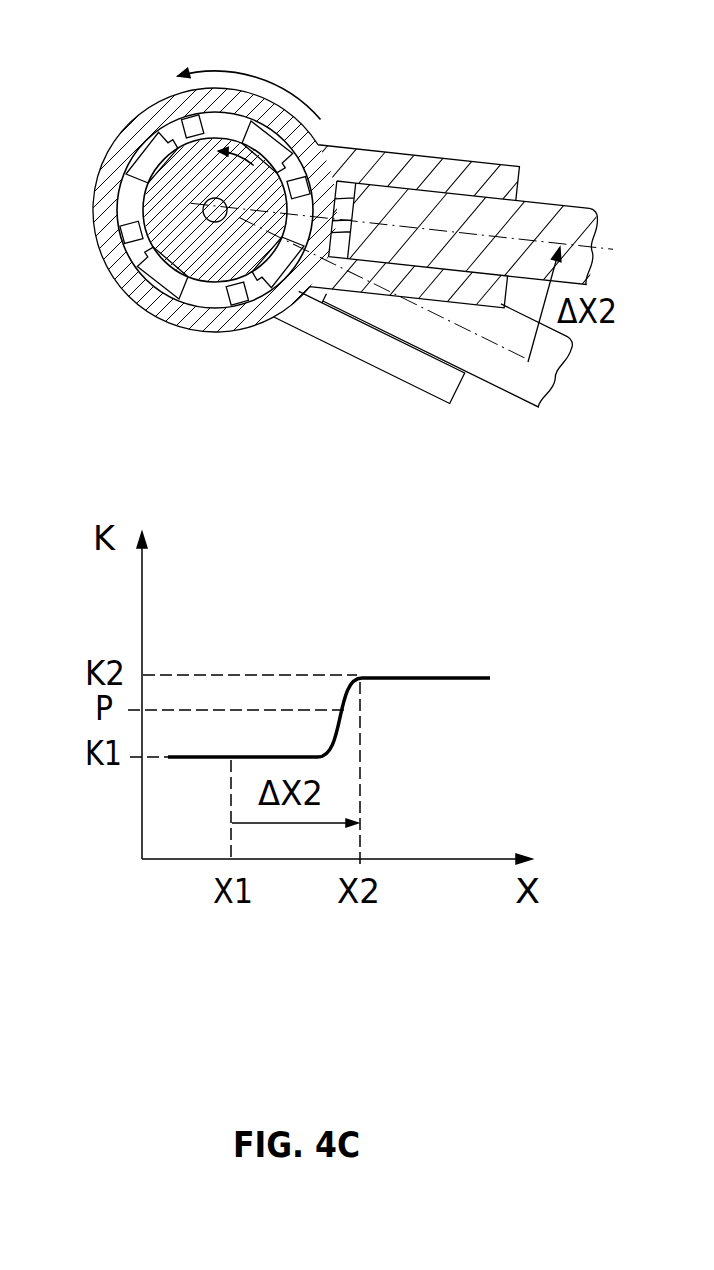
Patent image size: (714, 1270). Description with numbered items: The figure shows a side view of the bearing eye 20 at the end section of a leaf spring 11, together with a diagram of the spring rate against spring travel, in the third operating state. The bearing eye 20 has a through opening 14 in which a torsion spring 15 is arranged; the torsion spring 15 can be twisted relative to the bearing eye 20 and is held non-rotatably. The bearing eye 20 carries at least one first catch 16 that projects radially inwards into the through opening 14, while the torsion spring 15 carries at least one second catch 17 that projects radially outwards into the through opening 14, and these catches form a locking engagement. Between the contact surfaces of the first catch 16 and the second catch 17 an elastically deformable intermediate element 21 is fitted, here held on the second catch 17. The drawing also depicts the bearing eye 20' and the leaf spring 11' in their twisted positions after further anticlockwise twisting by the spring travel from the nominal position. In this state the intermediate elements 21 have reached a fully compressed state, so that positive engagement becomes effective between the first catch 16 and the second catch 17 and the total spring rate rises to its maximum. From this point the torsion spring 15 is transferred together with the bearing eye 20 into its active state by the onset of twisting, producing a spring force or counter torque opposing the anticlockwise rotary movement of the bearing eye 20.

The leaf spring 11 is at (476, 201).
The leaf spring in twisted position 11' is at (449, 360).
The through opening 14 is at (218, 300).
The torsion spring 15 is at (193, 293).
The first catch 16 is at (265, 307).
The second catch 17 is at (140, 157).
The bearing eye 20 is at (351, 220).
The bearing eye in twisted position 20' is at (371, 369).
The intermediate element 21 is at (160, 157).